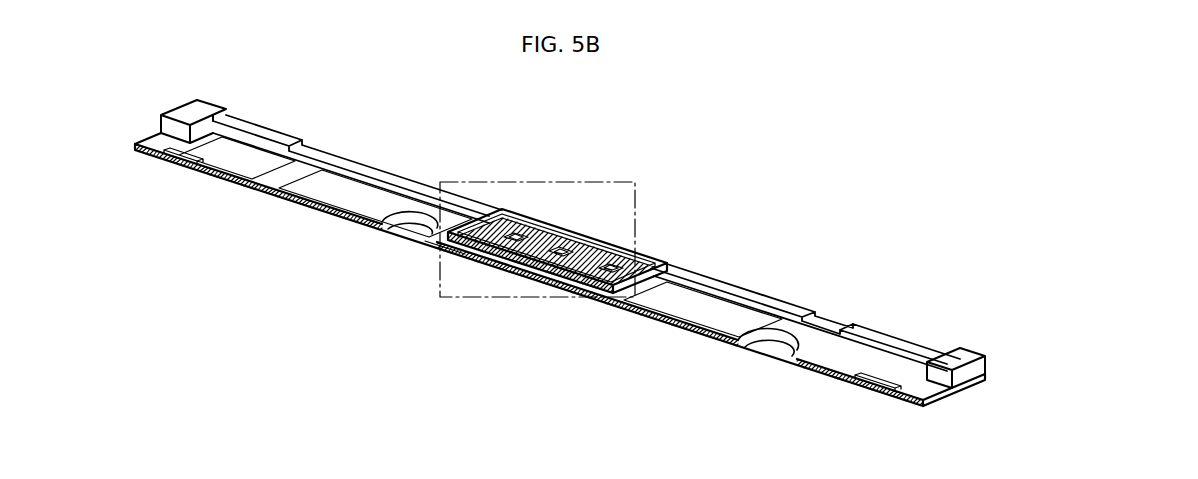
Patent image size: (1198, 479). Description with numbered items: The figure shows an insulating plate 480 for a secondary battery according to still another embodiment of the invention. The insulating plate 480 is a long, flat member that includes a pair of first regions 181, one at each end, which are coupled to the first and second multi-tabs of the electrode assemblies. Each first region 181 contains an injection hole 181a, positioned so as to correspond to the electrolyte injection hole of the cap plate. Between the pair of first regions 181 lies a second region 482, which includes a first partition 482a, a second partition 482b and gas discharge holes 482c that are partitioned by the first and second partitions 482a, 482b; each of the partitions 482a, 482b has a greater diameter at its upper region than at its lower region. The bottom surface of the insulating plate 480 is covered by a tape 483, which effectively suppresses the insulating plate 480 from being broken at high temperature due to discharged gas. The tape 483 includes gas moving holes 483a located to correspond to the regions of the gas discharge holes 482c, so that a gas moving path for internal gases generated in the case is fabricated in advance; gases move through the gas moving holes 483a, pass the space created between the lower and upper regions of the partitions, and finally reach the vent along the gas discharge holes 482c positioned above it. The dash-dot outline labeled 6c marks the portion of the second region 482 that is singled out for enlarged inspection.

The insulating plate 480 is at (888, 222).
The first region 181 is at (380, 188).
The injection hole 181a is at (395, 237).
The second region 482 is at (536, 197).
The first partition 482a is at (575, 258).
The second partition 482b is at (497, 208).
The gas discharge holes 482c is at (562, 236).
The tape 483 is at (432, 243).
The gas moving holes 483a is at (496, 263).
The region 6c is at (634, 181).